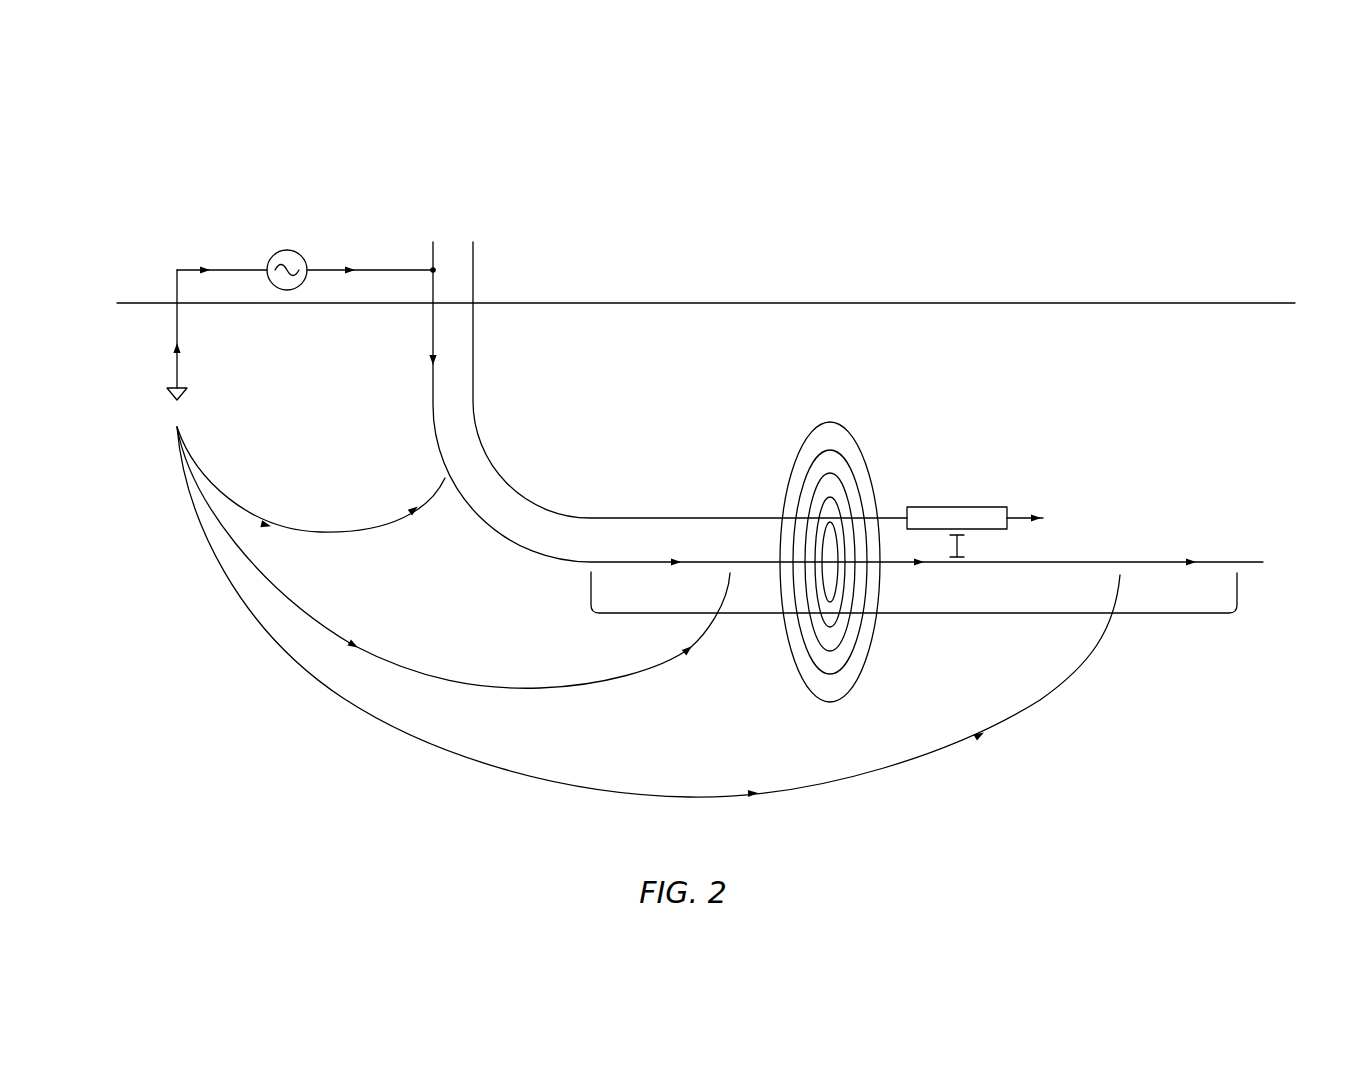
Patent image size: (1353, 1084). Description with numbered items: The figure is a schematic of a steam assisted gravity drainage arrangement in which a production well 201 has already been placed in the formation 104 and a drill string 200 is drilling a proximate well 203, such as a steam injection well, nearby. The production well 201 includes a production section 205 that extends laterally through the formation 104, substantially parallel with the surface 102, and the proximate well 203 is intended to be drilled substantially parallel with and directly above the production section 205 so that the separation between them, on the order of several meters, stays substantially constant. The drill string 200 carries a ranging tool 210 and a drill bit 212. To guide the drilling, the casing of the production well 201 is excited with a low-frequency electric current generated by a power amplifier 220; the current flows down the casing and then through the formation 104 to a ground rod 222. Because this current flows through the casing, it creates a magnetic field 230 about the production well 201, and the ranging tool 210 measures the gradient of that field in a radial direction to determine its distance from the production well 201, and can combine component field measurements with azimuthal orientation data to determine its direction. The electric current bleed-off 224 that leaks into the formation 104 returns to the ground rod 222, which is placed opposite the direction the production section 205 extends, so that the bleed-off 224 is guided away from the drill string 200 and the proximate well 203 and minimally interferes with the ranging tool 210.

The surface 102 is at (1082, 303).
The formation 104 is at (878, 702).
The drill string 200 is at (939, 481).
The production well 201 is at (1105, 562).
The proximate well 203 is at (597, 518).
The production section 205 is at (912, 613).
The ranging tool 210 is at (952, 507).
The drill bit 212 is at (1025, 517).
The power amplifier 220 is at (275, 252).
The ground rod 222 is at (173, 317).
The electric current bleed-off 224 is at (318, 532).
The magnetic field 230 is at (805, 443).